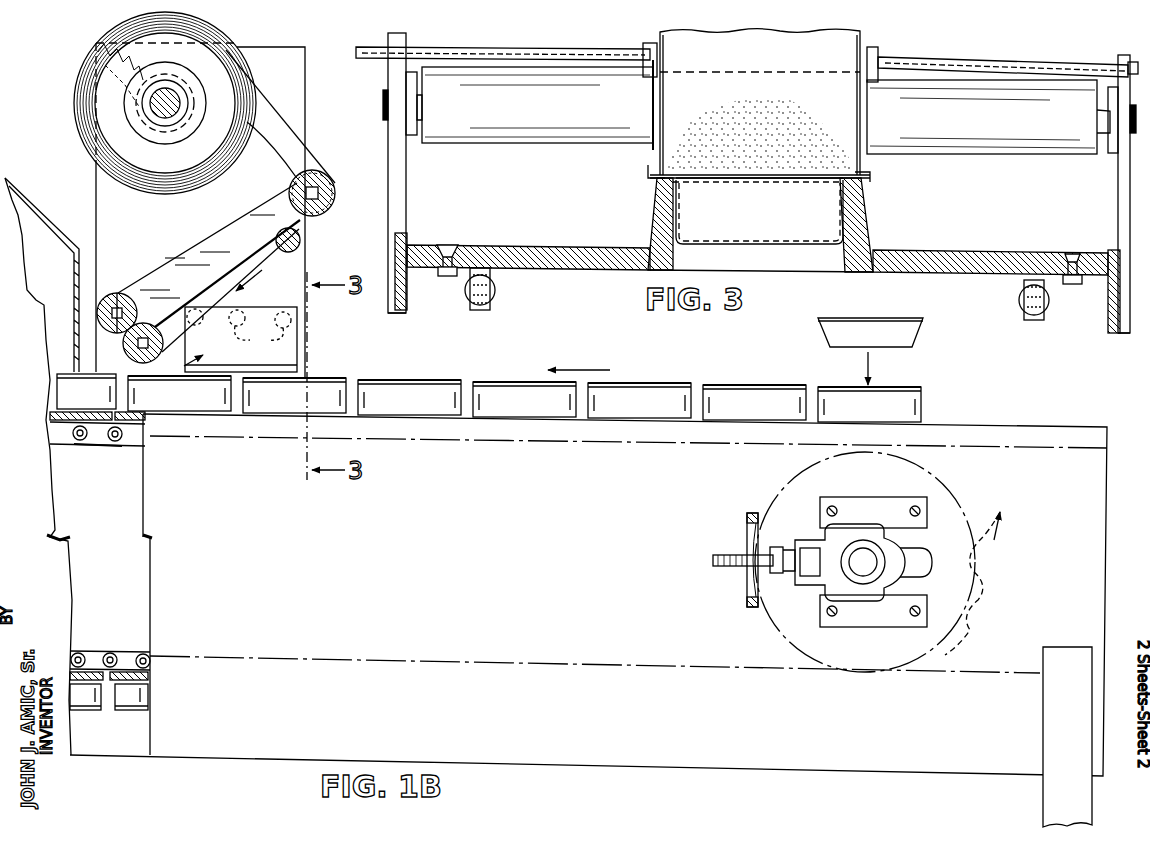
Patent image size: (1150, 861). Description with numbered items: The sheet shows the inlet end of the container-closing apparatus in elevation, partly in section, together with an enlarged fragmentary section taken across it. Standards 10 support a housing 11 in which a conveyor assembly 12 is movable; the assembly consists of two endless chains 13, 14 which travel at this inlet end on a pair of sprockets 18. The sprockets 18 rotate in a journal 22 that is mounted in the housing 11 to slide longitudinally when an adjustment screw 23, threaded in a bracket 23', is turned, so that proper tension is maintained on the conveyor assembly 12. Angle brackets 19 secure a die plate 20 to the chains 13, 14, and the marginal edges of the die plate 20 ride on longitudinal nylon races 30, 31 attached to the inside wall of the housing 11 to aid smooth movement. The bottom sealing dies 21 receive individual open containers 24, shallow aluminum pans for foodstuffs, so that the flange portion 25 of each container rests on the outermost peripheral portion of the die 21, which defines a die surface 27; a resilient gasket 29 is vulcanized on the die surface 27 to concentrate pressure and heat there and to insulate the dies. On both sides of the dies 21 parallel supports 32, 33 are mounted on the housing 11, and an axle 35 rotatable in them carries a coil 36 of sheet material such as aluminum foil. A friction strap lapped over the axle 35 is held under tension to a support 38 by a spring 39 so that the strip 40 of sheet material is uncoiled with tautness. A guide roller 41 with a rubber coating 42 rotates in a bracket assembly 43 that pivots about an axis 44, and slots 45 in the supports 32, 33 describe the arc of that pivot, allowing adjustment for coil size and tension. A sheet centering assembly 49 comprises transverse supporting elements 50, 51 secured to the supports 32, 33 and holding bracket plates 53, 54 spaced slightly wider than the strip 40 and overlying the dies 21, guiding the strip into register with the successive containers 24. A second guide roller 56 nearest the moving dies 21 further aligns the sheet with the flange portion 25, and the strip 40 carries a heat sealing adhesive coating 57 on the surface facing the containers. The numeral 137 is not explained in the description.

In FIG. 1B, the standards 10 is at (1051, 737).
In FIG. 1B, the housing 11 is at (1026, 435).
In FIG. 3, the housing 11 is at (400, 307).
In FIG. 1B, the conveyor assembly 12 is at (103, 448).
In FIG. 1B, the endless chain 13 is at (140, 437).
In FIG. 3, the endless chain 13 is at (490, 308).
In FIG. 3, the endless chain 14 is at (1027, 315).
In FIG. 1B, the pair of sprockets 18 is at (975, 598).
In FIG. 1B, the angle brackets 19 is at (52, 433).
In FIG. 3, the angle brackets 19 is at (474, 306).
In FIG. 1B, the die plate 20 is at (84, 650).
In FIG. 3, the die plate 20 is at (553, 254).
In FIG. 1B, the bottom sealing die 21 is at (62, 394).
In FIG. 3, the bottom sealing die 21 is at (662, 222).
In FIG. 1B, the journal 22 is at (880, 533).
In FIG. 1B, the adjustment screw 23 is at (759, 545).
In FIG. 1B, the bracket 23' is at (735, 560).
In FIG. 3, the open container 24 is at (775, 227).
In FIG. 1B, the flange portion 25 is at (411, 384).
In FIG. 3, the flange portion 25 is at (866, 178).
In FIG. 3, the die surface 27 is at (650, 170).
In FIG. 1B, the resilient gasket 29 is at (96, 712).
In FIG. 3, the resilient gasket 29 is at (866, 182).
In FIG. 3, the nylon race 30 is at (412, 285).
In FIG. 3, the nylon race 31 is at (1100, 298).
In FIG. 3, the support 32 is at (398, 192).
In FIG. 1B, the support 33 is at (100, 220).
In FIG. 3, the support 33 is at (1120, 195).
In FIG. 1B, the axle 35 is at (178, 97).
In FIG. 1B, the coil of sheet material 36 is at (165, 189).
In FIG. 1B, the support 38 is at (96, 50).
In FIG. 1B, the spring 39 is at (104, 66).
In FIG. 1B, the strip of sheet material 40 is at (292, 118).
In FIG. 3, the strip of sheet material 40 is at (855, 50).
In FIG. 1B, the guide roller 41 is at (326, 181).
In FIG. 1B, the rubber coating 42 is at (336, 197).
In FIG. 1B, the bracket assembly 43 is at (237, 237).
In FIG. 1B, the axis 44 is at (114, 302).
In FIG. 1B, the slots 45 is at (280, 162).
In FIG. 1B, the sheet centering assembly 49 is at (300, 243).
In FIG. 3, the sheet centering assembly 49 is at (640, 50).
In FIG. 3, the transverse supporting element 50 is at (450, 48).
In FIG. 1B, the transverse supporting element 51 is at (239, 330).
In FIG. 3, the transverse supporting element 51 is at (1068, 69).
In FIG. 3, the bracket plate 53 is at (652, 117).
In FIG. 1B, the bracket plate 54 is at (274, 314).
In FIG. 3, the bracket plate 54 is at (870, 130).
In FIG. 1B, the second guide roller 56 is at (125, 351).
In FIG. 3, the second guide roller 56 is at (536, 135).
In FIG. 1B, the heat sealing adhesive coating 57 is at (258, 268).
In FIG. 3, the heat sealing adhesive coating 57 is at (778, 180).
In FIG. 1B, the core shaft 137 is at (140, 108).